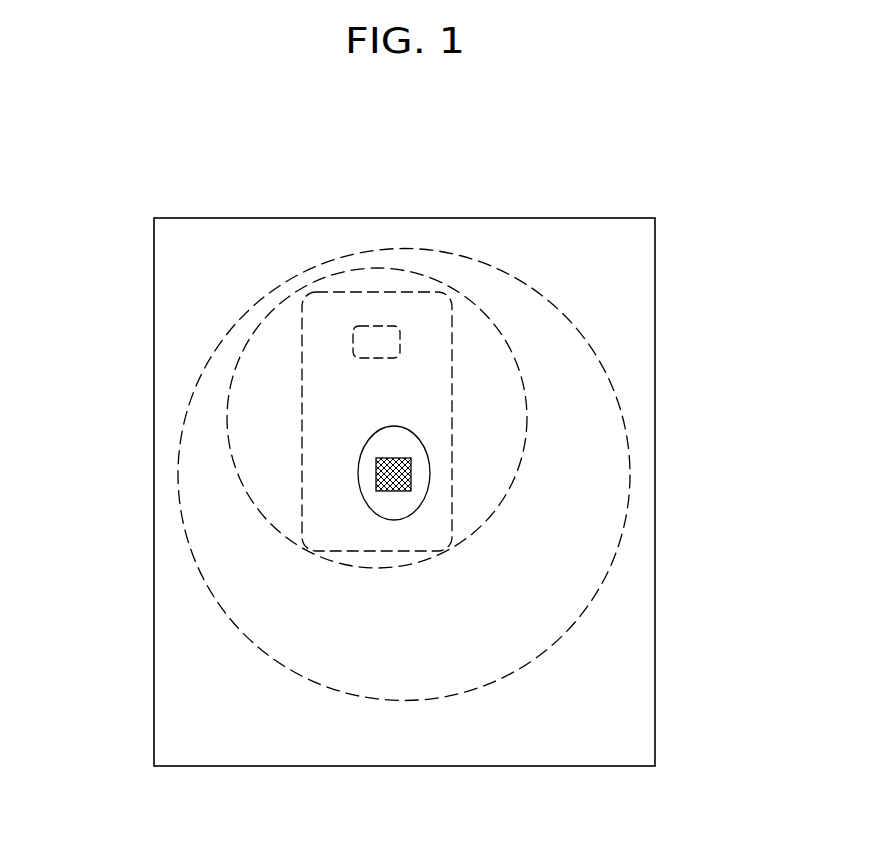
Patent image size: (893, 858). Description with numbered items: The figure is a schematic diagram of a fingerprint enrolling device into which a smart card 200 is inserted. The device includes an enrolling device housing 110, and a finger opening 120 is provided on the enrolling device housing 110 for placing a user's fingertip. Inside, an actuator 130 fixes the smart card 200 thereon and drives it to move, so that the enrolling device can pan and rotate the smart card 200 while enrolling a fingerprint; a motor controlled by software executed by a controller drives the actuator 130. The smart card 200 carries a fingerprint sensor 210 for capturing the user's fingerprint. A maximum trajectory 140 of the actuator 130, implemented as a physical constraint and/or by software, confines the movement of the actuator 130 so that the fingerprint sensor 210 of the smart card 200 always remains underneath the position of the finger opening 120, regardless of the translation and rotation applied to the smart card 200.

The enrolling device housing 110 is at (154, 382).
The finger opening 120 is at (393, 521).
The actuator 130 is at (265, 526).
The maximum trajectory 140 is at (178, 476).
The smart card 200 is at (452, 367).
The fingerprint sensor 210 is at (411, 474).